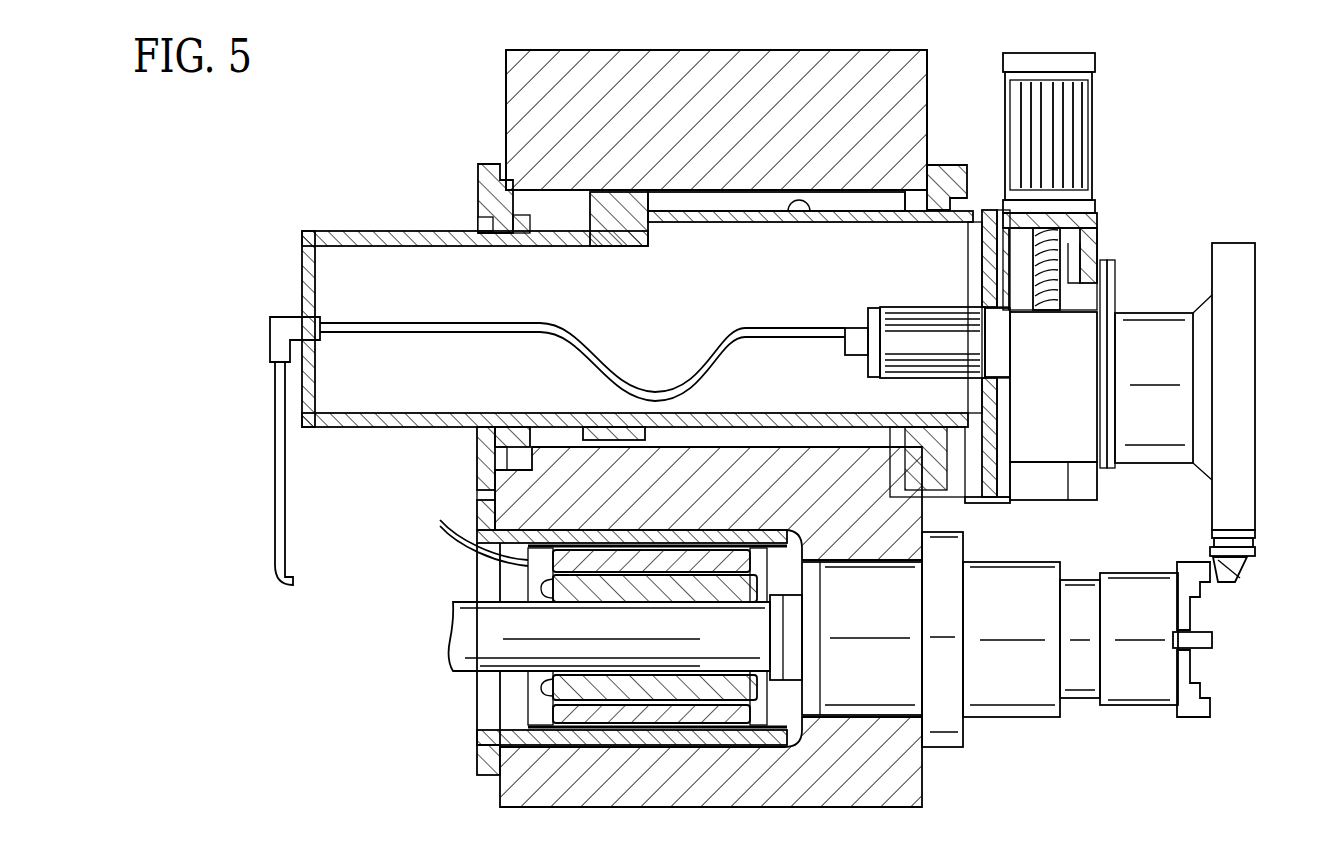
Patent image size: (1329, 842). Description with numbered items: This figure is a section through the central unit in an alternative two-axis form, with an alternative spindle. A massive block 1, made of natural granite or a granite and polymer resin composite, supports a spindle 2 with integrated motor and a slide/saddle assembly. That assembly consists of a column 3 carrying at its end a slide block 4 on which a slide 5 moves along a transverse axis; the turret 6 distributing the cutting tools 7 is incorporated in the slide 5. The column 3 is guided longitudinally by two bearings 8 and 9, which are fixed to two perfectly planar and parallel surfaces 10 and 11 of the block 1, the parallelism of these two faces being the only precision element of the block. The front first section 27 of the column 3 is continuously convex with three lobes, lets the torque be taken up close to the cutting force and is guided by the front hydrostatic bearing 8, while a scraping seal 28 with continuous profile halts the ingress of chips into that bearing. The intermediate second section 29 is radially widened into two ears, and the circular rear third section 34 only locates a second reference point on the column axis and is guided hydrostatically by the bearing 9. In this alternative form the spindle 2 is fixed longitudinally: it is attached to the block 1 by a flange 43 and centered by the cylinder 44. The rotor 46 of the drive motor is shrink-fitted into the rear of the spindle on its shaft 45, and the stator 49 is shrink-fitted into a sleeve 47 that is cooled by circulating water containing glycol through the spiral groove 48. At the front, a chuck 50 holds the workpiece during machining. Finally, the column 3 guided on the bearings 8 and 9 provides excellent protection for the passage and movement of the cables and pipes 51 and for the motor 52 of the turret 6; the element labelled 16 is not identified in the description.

The block 1 is at (628, 80).
The spindle 2 is at (1027, 690).
The column 3 is at (713, 222).
The slide block 4 is at (1090, 235).
The slide 5 is at (1077, 433).
The turret 6 is at (1156, 360).
The cutting tools 7 is at (1233, 568).
The front hydrostatic bearing 8 is at (952, 487).
The bearing 9 is at (480, 198).
The planar surface 10 is at (930, 80).
The planar surface 11 is at (505, 114).
The motor 16 is at (1075, 130).
The first section 27 is at (798, 212).
The scraping seal 28 is at (985, 202).
The second section 29 is at (630, 440).
The third section 34 is at (392, 432).
The flange 43 is at (943, 720).
The cylinder 44 is at (870, 565).
The shaft 45 is at (455, 623).
The rotor 46 is at (578, 680).
The sleeve 47 is at (560, 718).
The spiral groove 48 is at (665, 735).
The stator 49 is at (580, 750).
The chuck 50 is at (1150, 680).
The cables and pipes 51 is at (476, 325).
The motor 52 is at (937, 310).